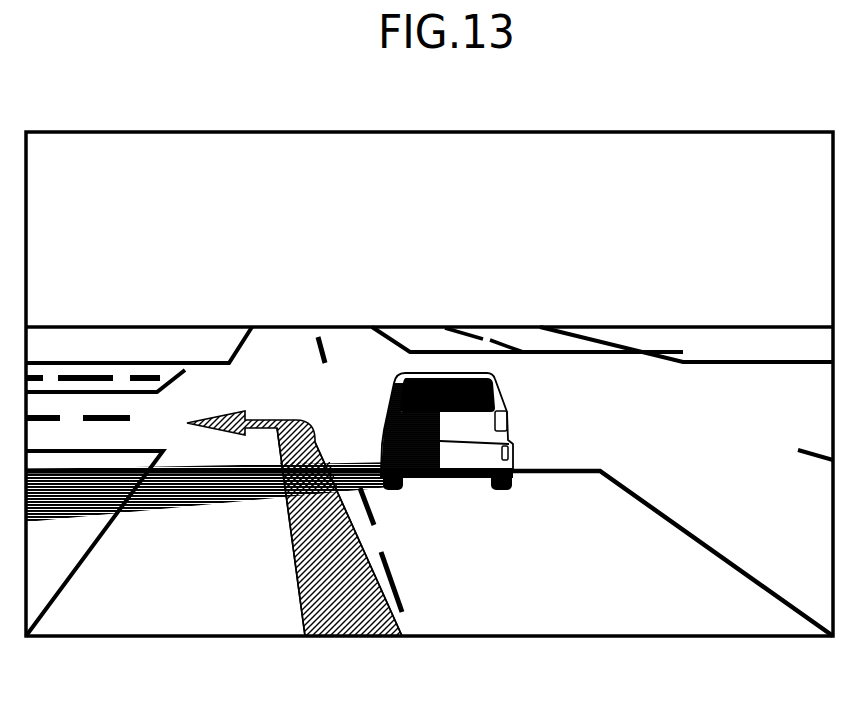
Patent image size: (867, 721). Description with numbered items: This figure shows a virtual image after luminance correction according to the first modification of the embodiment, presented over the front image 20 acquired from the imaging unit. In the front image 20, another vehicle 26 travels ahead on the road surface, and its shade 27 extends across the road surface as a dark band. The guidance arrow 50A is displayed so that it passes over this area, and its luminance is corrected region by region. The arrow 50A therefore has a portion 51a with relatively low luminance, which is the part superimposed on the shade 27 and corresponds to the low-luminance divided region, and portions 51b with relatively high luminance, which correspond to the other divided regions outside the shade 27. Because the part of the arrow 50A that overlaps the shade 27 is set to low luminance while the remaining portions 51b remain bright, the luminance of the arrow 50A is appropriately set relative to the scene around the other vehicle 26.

The front image 20 is at (636, 127).
The another vehicle 26 is at (506, 392).
The shade 27 is at (176, 458).
The arrow 50A is at (325, 438).
The portion having relatively low luminance 51a is at (290, 482).
The portions having relatively high luminance 51b is at (297, 434).